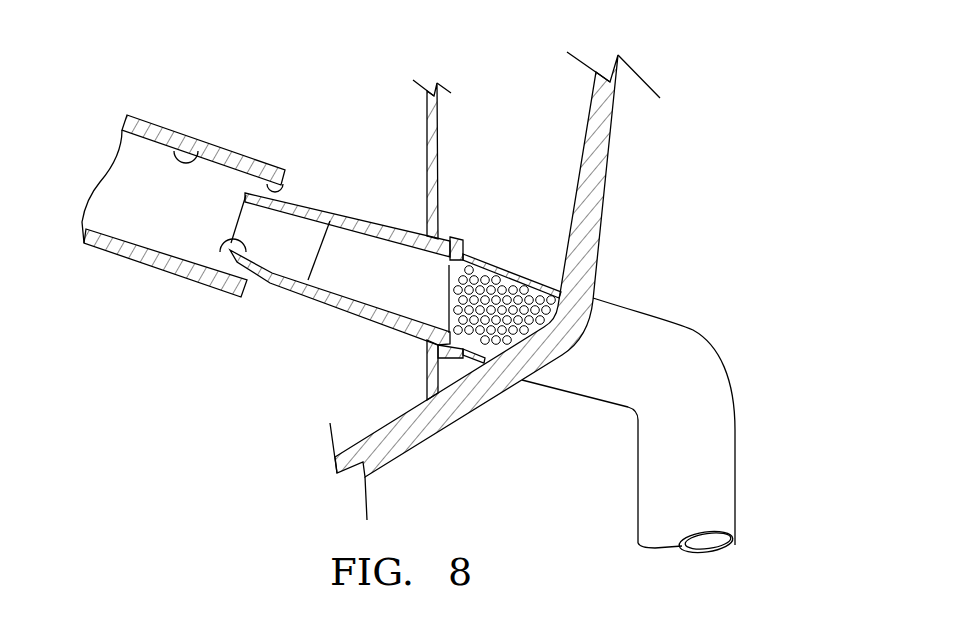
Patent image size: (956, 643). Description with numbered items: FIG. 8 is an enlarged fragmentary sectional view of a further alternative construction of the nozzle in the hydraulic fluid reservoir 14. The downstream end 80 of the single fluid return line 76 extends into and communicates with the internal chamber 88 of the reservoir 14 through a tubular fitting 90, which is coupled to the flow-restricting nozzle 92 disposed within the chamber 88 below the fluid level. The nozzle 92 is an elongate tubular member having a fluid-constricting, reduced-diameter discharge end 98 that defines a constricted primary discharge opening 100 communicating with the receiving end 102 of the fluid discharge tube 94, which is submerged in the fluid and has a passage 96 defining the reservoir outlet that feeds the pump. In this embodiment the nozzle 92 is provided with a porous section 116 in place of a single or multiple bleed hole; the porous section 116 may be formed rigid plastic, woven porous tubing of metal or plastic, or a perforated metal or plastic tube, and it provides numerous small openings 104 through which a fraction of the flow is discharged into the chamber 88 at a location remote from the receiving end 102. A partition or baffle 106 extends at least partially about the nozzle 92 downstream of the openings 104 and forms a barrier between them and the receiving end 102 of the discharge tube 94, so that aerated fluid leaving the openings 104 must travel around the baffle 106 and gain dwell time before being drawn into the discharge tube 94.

The reservoir 14 is at (616, 170).
The single fluid return line 76 is at (736, 521).
The downstream end 80 is at (733, 480).
The internal chamber 88 is at (590, 105).
The tubular fitting 90 is at (703, 347).
The flow-restricting nozzle 92 is at (392, 225).
The fluid discharge tube 94 is at (157, 122).
The passage 96 is at (217, 146).
The discharge end 98 is at (290, 290).
The primary discharge opening 100 is at (223, 243).
The receiving end 102 is at (282, 192).
The bleed opening 104 is at (539, 288).
The baffle 106 is at (440, 113).
The porous section 116 is at (521, 346).